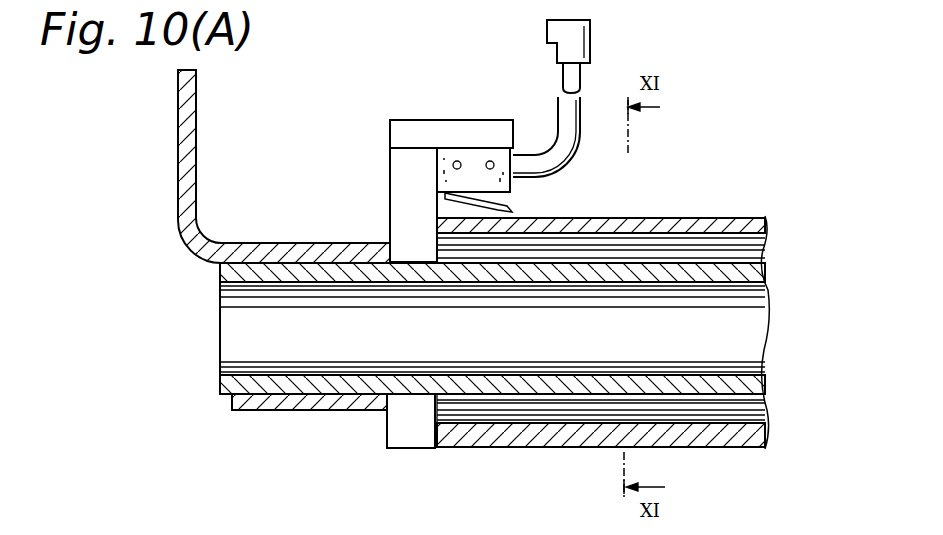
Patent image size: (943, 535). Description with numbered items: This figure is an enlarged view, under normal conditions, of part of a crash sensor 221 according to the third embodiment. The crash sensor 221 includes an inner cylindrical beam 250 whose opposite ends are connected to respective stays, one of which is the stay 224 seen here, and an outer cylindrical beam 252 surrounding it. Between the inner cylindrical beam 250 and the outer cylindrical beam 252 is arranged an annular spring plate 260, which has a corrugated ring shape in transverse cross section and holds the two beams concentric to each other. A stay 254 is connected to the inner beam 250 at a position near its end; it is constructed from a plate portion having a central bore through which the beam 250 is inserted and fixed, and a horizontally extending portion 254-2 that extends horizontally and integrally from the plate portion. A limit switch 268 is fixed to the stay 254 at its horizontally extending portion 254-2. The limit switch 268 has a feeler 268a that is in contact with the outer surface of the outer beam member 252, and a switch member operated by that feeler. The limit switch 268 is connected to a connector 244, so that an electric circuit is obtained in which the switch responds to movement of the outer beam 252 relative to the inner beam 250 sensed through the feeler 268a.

The crash sensor 221 is at (748, 154).
The stay 224 is at (197, 108).
The connector 244 is at (592, 47).
The inner cylindrical beam 250 is at (768, 283).
The outer cylindrical beam 252 is at (768, 228).
The stay 254 is at (403, 150).
The horizontally extending portion 254-2 is at (500, 130).
The annular spring plate 260 is at (648, 238).
The limit switch 268 is at (465, 165).
The feeler 268a is at (497, 203).